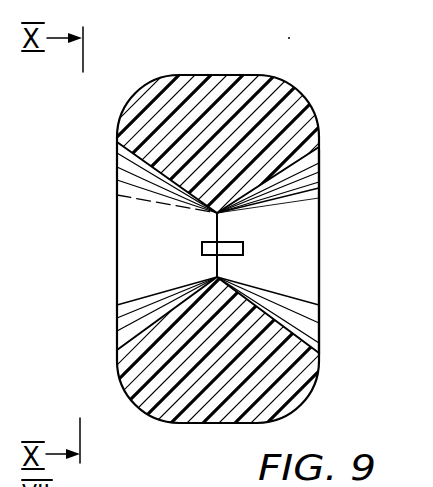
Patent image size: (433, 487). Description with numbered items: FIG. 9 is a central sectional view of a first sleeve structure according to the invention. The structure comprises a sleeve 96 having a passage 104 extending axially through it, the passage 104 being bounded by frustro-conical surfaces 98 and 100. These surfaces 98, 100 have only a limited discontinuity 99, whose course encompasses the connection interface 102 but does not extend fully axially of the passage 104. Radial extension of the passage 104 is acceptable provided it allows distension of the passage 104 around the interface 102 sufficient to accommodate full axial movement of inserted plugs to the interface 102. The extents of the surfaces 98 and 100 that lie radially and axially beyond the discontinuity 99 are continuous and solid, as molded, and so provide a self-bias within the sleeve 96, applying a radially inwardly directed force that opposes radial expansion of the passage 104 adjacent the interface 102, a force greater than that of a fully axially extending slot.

The sleeve 96 is at (204, 75).
The frustro-conical surface 98 is at (190, 298).
The discontinuity 99 is at (222, 243).
The frustro-conical surface 100 is at (243, 300).
The connection interface 102 is at (223, 262).
The passage 104 is at (326, 202).